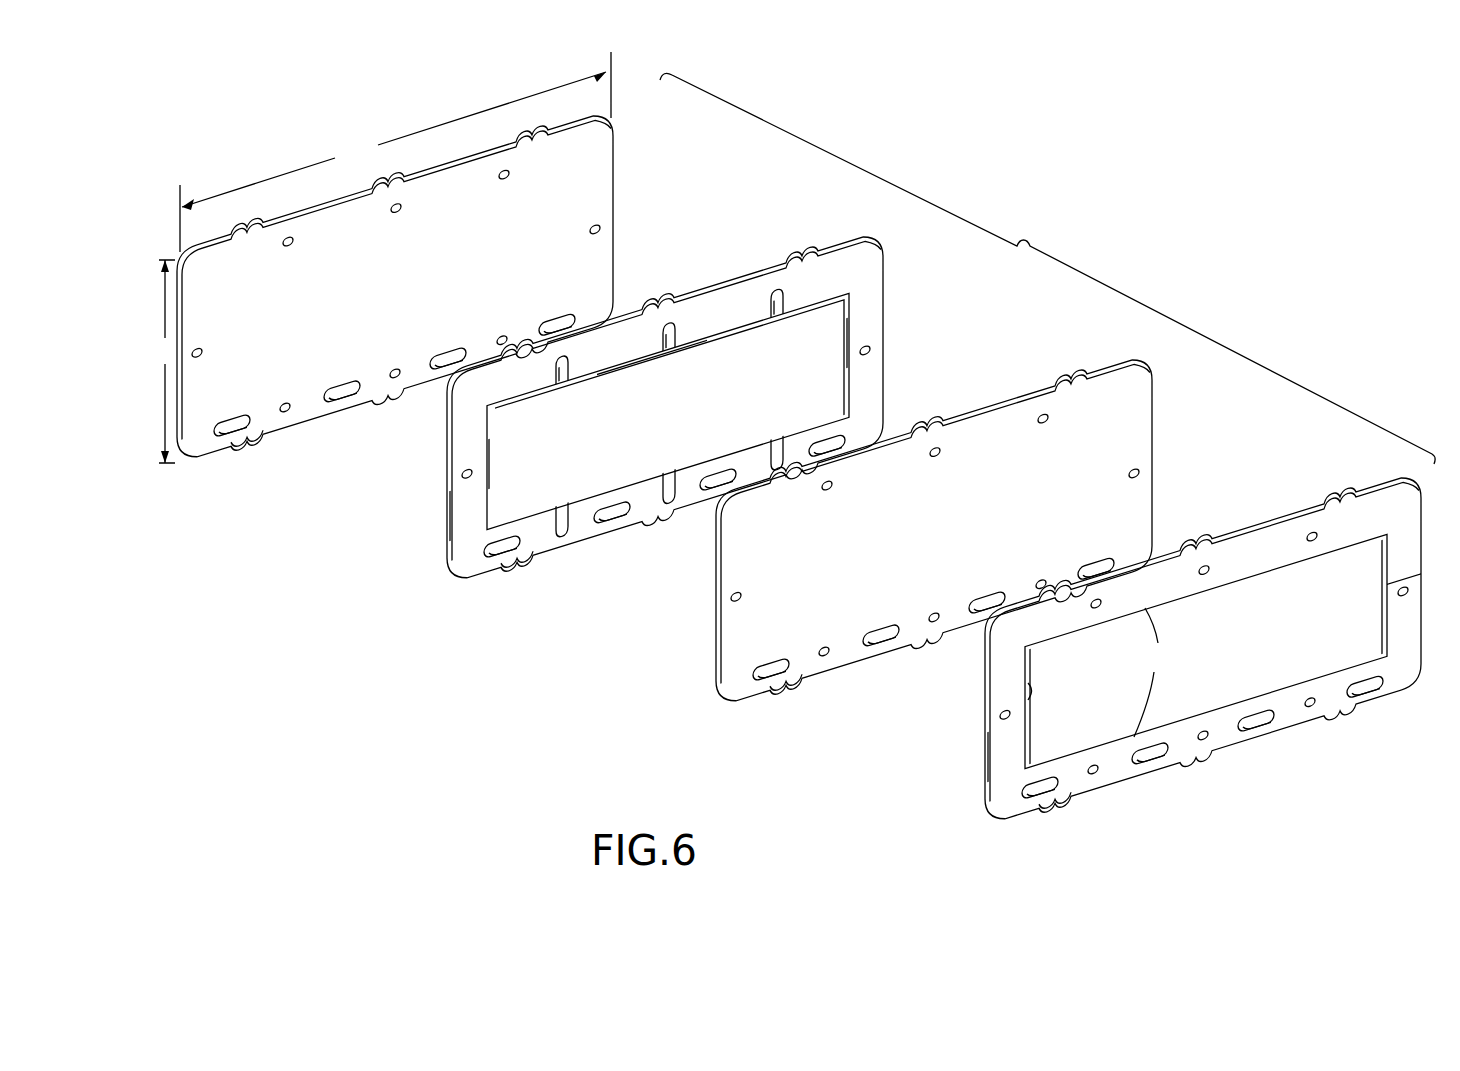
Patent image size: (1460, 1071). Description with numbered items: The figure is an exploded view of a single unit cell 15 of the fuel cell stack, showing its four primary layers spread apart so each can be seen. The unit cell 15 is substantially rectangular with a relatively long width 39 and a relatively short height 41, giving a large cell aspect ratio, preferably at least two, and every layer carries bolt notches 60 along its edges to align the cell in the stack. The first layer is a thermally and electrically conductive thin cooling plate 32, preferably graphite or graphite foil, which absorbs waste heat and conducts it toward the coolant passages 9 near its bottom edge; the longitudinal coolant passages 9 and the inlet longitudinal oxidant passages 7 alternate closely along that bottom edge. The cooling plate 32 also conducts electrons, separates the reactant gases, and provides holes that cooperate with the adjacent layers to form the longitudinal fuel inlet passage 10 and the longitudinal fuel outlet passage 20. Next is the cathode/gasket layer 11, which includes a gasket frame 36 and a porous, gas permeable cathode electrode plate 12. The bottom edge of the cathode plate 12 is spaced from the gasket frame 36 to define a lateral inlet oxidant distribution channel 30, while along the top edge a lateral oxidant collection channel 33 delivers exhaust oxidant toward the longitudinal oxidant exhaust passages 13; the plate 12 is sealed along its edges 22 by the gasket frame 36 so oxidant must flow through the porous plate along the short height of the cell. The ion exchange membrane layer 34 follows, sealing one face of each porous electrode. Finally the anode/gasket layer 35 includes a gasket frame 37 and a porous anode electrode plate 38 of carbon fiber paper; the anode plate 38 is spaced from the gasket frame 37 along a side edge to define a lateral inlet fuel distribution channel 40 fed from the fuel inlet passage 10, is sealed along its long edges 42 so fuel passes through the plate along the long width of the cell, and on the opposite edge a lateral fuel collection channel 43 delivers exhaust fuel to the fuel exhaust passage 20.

The inlet longitudinal oxidant passage 7 is at (287, 400).
The coolant passage 9 is at (238, 418).
The longitudinal fuel inlet passage 10 is at (601, 230).
The cathode/gasket layer 11 is at (905, 275).
The porous cathode electrode plate 12 is at (622, 432).
The longitudinal oxidant exhaust passage 13 is at (294, 244).
The unit cell 15 is at (1047, 268).
The longitudinal fuel outlet passage 20 is at (204, 352).
The edges of porous cathode plate 22 is at (488, 466).
The lateral inlet oxidant distribution channel 30 is at (772, 446).
The cooling plate 32 is at (625, 156).
The lateral oxidant collection channel 33 is at (622, 370).
The ion exchange membrane layer 34 is at (1170, 388).
The anode/gasket layer 35 is at (1422, 682).
The gasket frame 36 is at (446, 516).
The gasket frame 37 is at (984, 752).
The porous anode electrode plate 38 is at (1208, 644).
The width 39 is at (395, 152).
The lateral inlet fuel distribution channel 40 is at (1385, 573).
The height 41 is at (162, 361).
The long edges of porous anode plate 42 is at (1152, 672).
The lateral fuel collection channel 43 is at (1028, 683).
The bolt notch 60 is at (240, 446).